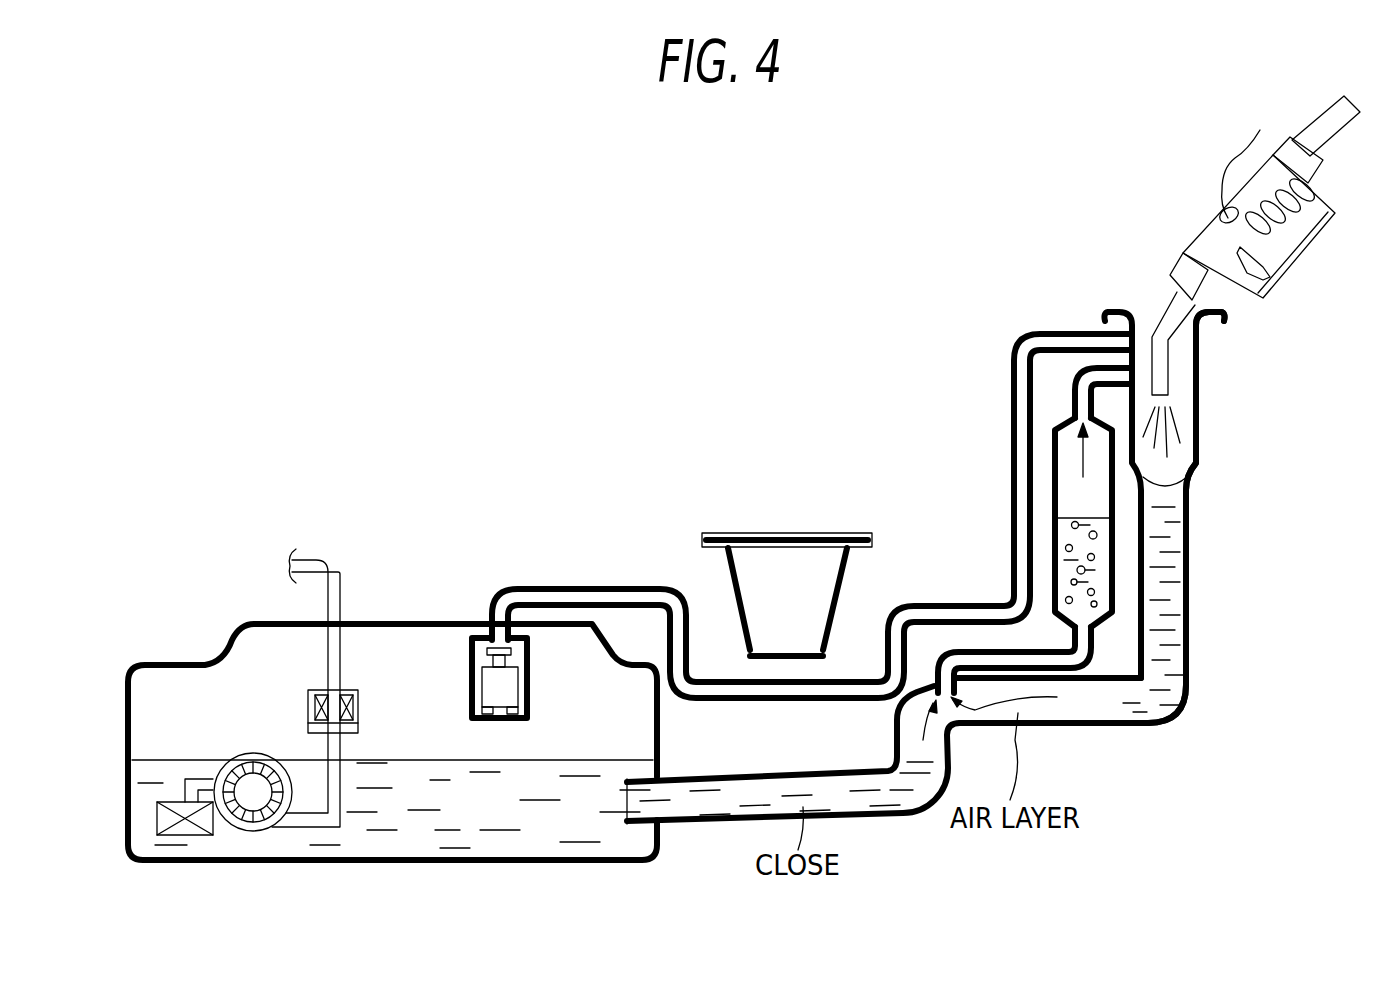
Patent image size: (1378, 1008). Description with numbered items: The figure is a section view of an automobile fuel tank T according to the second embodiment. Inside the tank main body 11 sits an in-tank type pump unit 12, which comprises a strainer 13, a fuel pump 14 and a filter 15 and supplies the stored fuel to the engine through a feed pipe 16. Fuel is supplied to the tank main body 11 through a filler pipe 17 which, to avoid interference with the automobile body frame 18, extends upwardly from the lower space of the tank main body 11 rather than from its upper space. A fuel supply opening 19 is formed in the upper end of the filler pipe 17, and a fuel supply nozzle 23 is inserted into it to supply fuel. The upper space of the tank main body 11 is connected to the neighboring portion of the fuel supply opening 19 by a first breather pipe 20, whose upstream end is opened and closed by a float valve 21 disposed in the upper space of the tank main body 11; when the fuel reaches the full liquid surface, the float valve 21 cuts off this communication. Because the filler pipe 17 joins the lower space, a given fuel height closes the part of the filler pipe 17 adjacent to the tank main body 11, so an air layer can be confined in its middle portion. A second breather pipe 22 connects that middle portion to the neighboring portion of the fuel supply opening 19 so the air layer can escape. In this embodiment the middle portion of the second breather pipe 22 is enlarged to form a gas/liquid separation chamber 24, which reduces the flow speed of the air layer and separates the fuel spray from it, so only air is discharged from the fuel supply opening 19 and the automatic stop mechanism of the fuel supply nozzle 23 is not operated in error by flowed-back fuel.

The fuel tank T is at (380, 546).
The tank main body 11 is at (240, 634).
The pump unit 12 is at (228, 745).
The strainer 13 is at (165, 821).
The fuel pump 14 is at (255, 778).
The filter 15 is at (348, 690).
The feed pipe 16 is at (307, 558).
The filler pipe 17 is at (1068, 727).
The automobile body frame 18 is at (842, 593).
The fuel supply opening 19 is at (1200, 322).
The first breather pipe 20 is at (595, 584).
The float valve 21 is at (455, 650).
The second breather pipe 22 is at (990, 650).
The fuel supply nozzle 23 is at (1208, 240).
The gas/liquid separation chamber 24 is at (1050, 470).